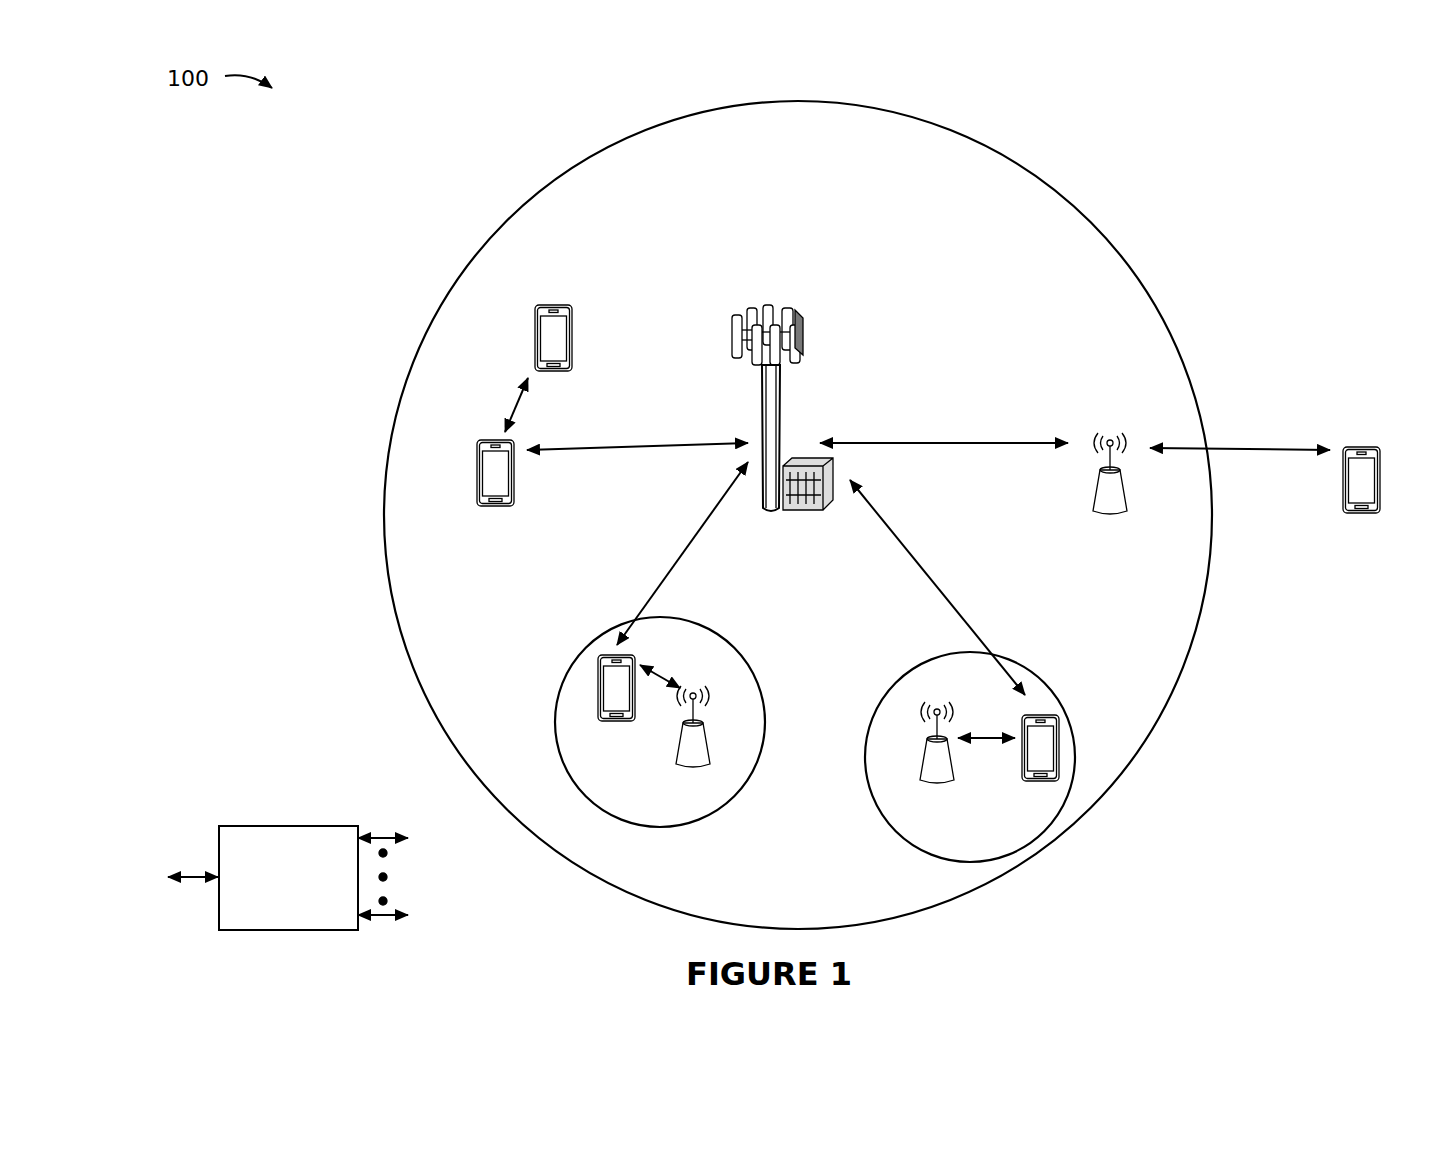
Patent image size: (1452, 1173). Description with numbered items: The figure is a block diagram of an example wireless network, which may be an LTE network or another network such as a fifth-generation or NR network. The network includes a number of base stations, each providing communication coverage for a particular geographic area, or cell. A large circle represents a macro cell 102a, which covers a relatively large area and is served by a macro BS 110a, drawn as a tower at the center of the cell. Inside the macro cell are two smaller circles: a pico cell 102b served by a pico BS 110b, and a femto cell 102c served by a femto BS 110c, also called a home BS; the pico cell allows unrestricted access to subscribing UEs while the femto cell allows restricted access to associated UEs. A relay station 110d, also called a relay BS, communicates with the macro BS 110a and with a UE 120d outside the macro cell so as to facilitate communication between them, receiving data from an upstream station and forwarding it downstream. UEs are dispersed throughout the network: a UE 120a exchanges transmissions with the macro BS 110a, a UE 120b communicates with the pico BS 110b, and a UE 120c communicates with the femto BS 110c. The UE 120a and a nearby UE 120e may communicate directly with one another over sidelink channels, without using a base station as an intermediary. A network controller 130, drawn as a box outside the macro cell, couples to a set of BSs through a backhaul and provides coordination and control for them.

The macro cell 102a is at (1078, 200).
The pico cell 102b is at (751, 661).
The femto cell 102c is at (905, 666).
The macro BS 110a is at (800, 300).
The pico BS 110b is at (711, 748).
The femto BS 110c is at (920, 768).
The relay station 110d is at (1111, 434).
The UE 120a is at (477, 473).
The UE 120b is at (600, 722).
The UE 120c is at (1026, 781).
The UE 120d is at (1372, 446).
The UE 120e is at (537, 329).
The network controller 130 is at (286, 824).